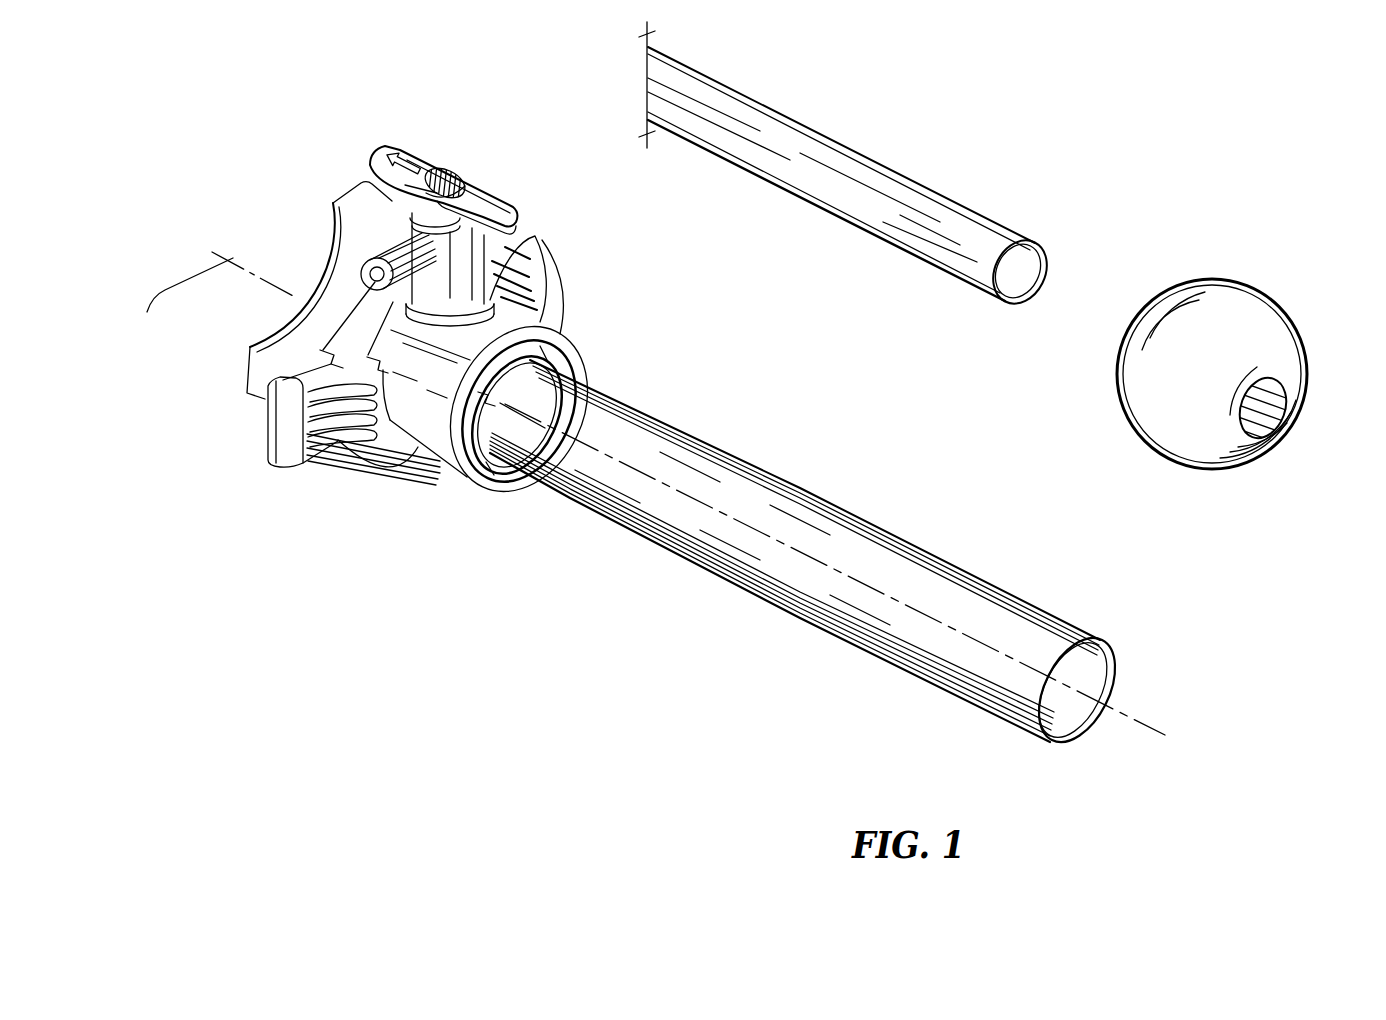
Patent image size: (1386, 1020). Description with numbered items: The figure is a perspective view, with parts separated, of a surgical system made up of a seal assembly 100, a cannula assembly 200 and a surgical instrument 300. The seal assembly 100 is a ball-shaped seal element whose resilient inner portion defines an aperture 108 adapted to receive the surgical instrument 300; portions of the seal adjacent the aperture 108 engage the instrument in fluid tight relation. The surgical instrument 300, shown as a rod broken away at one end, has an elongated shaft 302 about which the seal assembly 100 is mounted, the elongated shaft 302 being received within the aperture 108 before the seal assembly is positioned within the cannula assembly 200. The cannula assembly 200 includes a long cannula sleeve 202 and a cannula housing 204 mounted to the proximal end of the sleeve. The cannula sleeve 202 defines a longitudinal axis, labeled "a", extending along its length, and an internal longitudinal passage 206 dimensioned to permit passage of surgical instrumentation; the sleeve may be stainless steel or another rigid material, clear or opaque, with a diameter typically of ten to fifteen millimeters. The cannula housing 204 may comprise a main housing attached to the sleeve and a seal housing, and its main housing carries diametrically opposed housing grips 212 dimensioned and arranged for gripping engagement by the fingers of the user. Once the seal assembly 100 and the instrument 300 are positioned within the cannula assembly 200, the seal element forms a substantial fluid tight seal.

The seal assembly 100 is at (1244, 356).
The aperture 108 is at (1265, 408).
The cannula assembly 200 is at (675, 456).
The cannula sleeve 202 is at (856, 563).
The cannula housing 204 is at (248, 413).
The internal longitudinal passage 206 is at (1096, 678).
The housing grips 212 is at (550, 284).
The surgical instrument 300 is at (848, 167).
The elongated shaft 302 is at (922, 215).